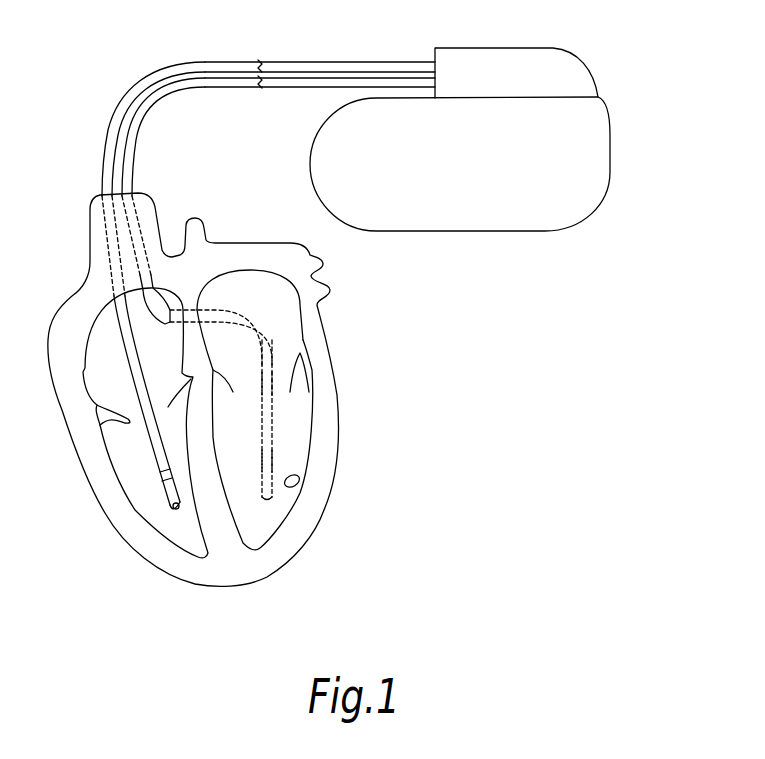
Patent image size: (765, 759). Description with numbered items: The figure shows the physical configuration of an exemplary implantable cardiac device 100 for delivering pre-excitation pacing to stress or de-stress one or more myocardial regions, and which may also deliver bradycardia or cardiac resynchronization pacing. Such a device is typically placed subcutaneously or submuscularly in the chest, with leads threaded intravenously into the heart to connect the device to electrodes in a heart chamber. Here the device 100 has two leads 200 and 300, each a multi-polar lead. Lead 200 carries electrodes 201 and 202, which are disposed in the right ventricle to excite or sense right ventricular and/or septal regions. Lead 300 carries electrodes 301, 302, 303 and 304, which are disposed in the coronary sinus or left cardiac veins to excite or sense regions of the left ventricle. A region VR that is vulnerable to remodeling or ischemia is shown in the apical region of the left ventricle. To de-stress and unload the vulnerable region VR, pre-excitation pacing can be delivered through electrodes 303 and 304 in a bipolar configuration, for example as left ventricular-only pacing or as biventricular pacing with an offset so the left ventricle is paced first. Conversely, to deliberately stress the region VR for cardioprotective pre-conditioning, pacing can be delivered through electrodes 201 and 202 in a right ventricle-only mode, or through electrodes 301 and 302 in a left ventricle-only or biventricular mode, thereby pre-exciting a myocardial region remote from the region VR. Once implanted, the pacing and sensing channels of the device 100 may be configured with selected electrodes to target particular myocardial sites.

The implantable cardiac device 100 is at (582, 64).
The lead 200 is at (205, 62).
The electrode 201 is at (158, 476).
The electrode 202 is at (177, 514).
The lead 300 is at (240, 88).
The electrode 301 is at (267, 358).
The electrode 302 is at (272, 385).
The electrode 303 is at (273, 463).
The electrode 304 is at (268, 500).
The vulnerable region VR is at (299, 485).